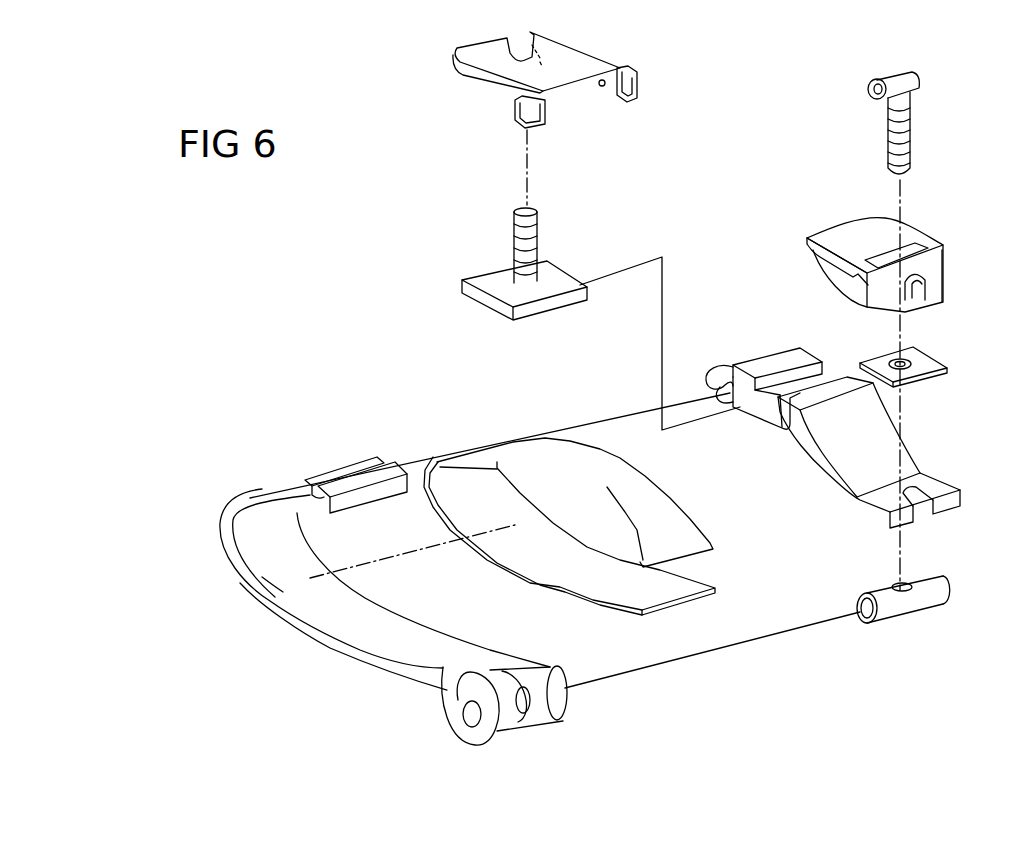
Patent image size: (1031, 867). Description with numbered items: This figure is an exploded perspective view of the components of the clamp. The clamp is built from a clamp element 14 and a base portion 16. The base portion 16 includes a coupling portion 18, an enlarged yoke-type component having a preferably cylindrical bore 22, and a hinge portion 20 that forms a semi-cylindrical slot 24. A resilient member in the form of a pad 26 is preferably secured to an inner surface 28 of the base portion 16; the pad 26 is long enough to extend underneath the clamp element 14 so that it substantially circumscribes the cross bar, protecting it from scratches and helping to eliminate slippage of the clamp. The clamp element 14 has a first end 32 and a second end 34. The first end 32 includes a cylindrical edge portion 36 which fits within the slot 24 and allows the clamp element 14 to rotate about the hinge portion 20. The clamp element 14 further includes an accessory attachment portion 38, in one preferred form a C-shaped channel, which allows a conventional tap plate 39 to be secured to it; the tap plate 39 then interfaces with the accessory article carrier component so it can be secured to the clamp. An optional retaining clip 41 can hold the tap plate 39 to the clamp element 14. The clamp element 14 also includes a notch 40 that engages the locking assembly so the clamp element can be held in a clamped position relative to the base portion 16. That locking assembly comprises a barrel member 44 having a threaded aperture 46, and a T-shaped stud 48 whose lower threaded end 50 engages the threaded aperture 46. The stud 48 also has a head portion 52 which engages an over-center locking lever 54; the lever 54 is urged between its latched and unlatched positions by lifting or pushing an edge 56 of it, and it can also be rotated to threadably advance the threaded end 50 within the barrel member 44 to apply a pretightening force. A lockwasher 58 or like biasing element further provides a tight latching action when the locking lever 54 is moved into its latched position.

The clamp element 14 is at (918, 456).
The base portion 16 is at (277, 623).
The coupling portion 18 is at (543, 693).
The hinge portion 20 is at (273, 499).
The bore 22 is at (450, 692).
The semi-cylindrical slot 24 is at (312, 486).
The resilient member (pad) 26 is at (704, 602).
The inner surface 28 is at (283, 592).
The first end 32 is at (743, 390).
The second end 34 is at (892, 464).
The cylindrical edge portion 36 is at (710, 382).
The accessory attachment portion 38 is at (770, 428).
The tap plate 39 is at (473, 295).
The notch 40 is at (930, 510).
The retaining clip 41 is at (483, 60).
The barrel member 44 is at (908, 588).
The threaded aperture 46 is at (900, 585).
The T-shaped stud 48 is at (897, 113).
The lower threaded end 50 is at (905, 172).
The head portion 52 is at (882, 83).
The over-center locking lever 54 is at (925, 281).
The edge 56 is at (889, 247).
The lockwasher 58 is at (915, 350).